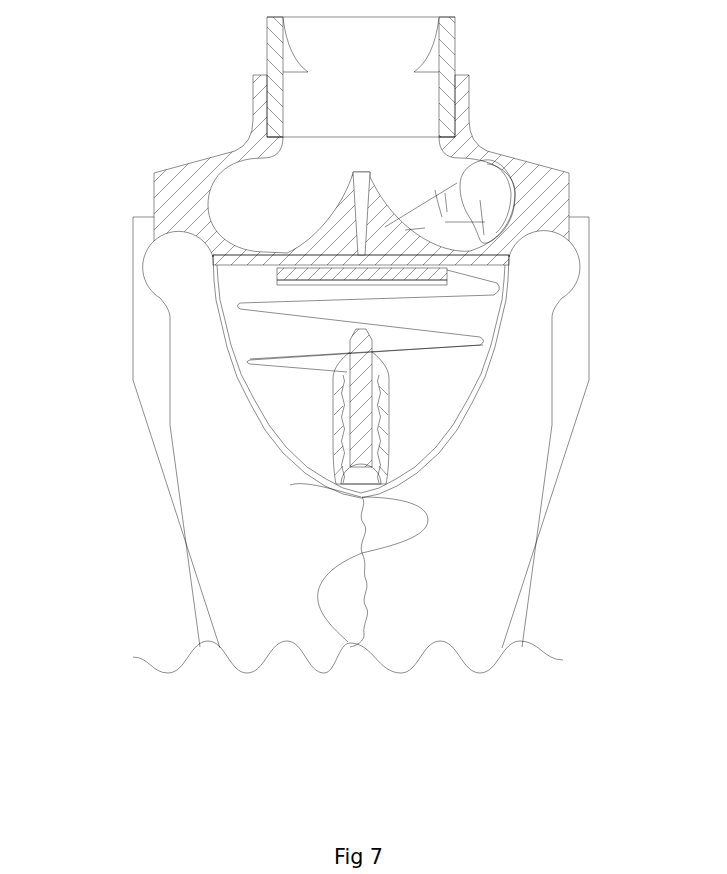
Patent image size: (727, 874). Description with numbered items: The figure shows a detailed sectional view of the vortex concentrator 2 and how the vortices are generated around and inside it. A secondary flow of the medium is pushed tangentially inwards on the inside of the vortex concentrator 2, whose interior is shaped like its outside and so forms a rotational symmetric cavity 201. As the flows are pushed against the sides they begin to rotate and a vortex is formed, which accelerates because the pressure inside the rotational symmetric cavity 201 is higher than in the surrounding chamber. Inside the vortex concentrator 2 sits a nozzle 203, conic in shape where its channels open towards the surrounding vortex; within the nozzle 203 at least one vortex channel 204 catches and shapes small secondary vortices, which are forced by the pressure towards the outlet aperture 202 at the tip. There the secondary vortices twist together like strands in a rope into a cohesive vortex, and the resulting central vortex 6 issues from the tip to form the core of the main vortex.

The vortex concentrator 2 is at (347, 419).
The rotational symmetric cavity 201 is at (213, 290).
The outlet aperture 202 is at (361, 498).
The nozzle 203 is at (392, 415).
The vortex channel 204 is at (382, 365).
The central vortex 6 is at (370, 615).